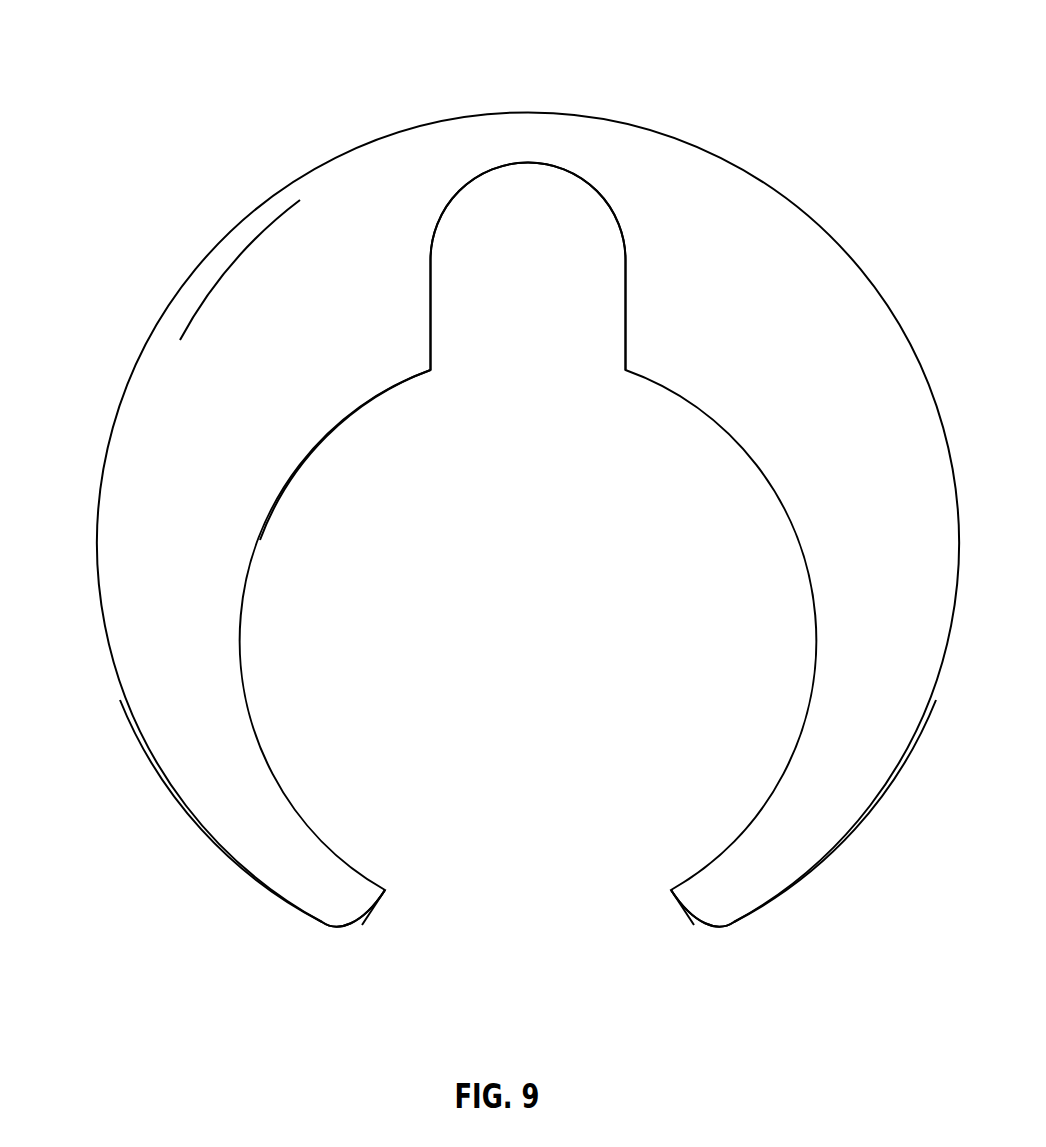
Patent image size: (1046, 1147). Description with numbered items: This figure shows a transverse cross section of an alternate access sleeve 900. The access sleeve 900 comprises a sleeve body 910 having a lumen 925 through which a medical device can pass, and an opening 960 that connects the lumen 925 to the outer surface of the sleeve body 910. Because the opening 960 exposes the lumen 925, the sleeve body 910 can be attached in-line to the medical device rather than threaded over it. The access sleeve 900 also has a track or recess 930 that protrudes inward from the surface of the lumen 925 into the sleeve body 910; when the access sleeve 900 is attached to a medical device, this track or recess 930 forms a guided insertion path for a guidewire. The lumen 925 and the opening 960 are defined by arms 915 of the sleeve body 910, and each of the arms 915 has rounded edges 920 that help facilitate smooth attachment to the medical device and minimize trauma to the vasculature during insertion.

The access sleeve 900 is at (393, 103).
The sleeve body 910 is at (305, 233).
The arms 915 is at (210, 770).
The rounded edges 920 is at (344, 900).
The lumen 925 is at (363, 487).
The track or recess 930 is at (622, 230).
The opening 960 is at (521, 913).